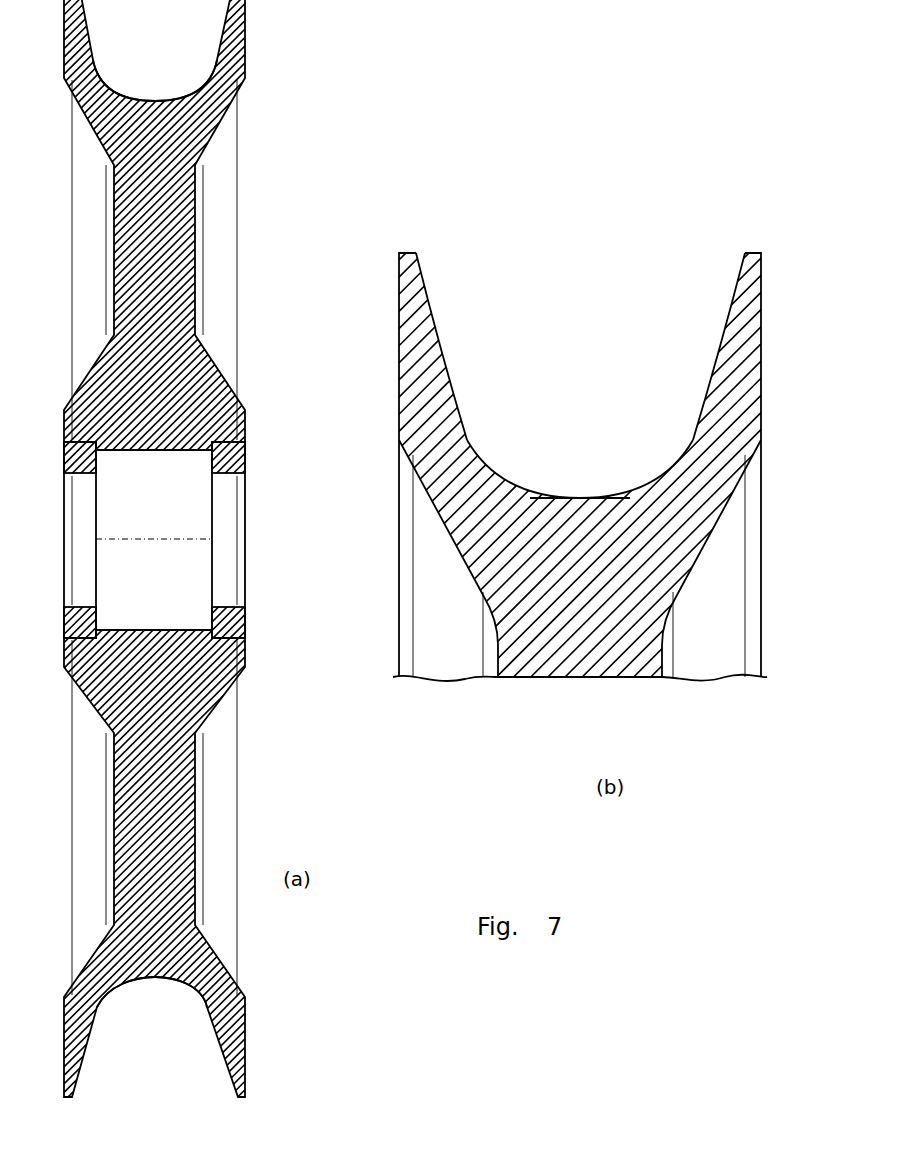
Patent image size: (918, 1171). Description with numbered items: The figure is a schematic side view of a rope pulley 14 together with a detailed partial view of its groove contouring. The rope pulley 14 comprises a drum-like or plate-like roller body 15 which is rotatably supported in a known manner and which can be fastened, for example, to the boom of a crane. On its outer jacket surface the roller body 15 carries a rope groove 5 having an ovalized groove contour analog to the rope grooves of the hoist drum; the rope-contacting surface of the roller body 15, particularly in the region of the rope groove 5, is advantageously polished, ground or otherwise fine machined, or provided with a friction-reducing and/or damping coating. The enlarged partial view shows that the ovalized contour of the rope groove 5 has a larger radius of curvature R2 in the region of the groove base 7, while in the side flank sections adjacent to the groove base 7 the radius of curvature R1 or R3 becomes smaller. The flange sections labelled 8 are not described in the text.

The rope groove 5 is at (158, 90).
The groove base 7 is at (145, 979).
The flange 8 is at (74, 1088).
The rope pulley 14 is at (256, 296).
The roller body 15 is at (242, 431).
The radius of curvature R1 is at (476, 426).
The radius of curvature R2 is at (585, 483).
The radius of curvature R3 is at (677, 446).